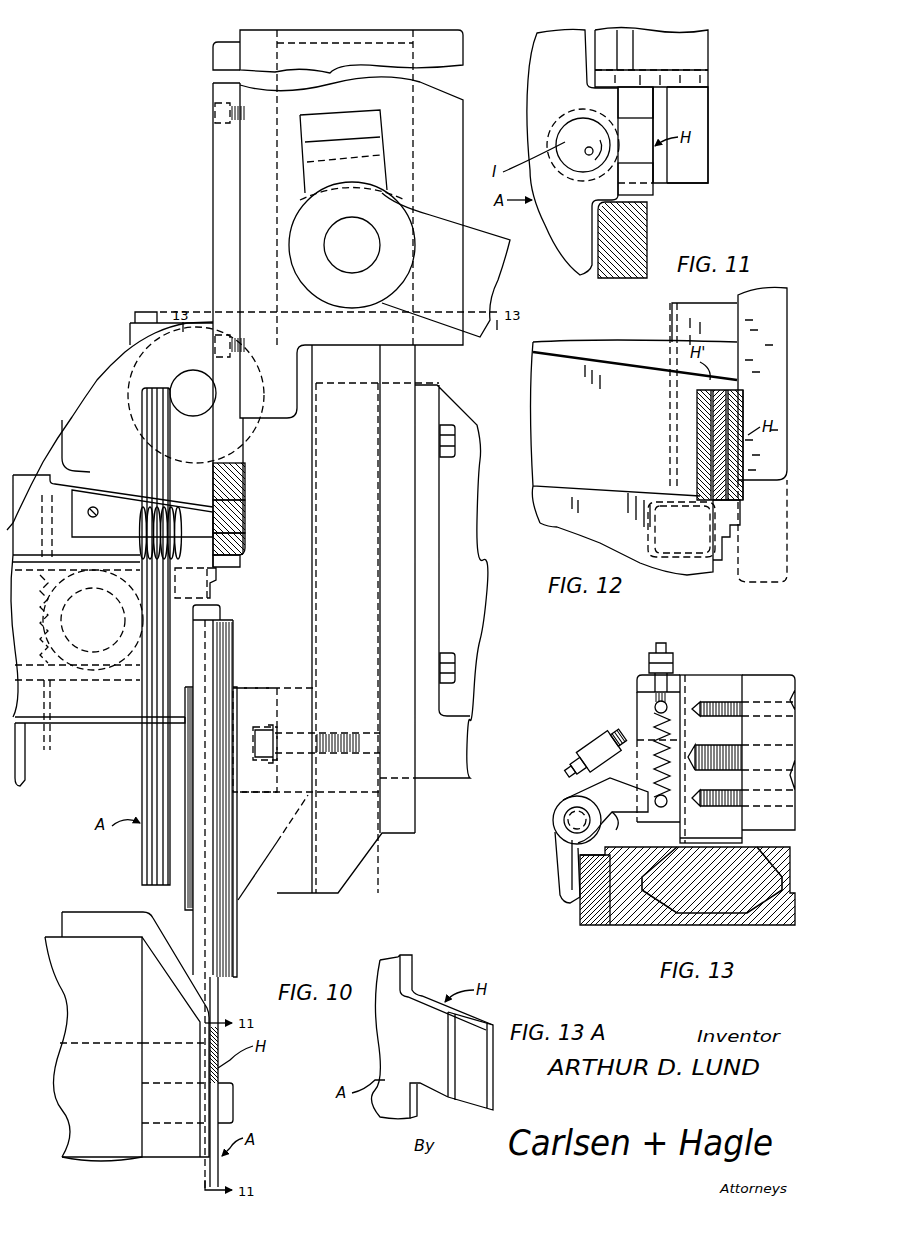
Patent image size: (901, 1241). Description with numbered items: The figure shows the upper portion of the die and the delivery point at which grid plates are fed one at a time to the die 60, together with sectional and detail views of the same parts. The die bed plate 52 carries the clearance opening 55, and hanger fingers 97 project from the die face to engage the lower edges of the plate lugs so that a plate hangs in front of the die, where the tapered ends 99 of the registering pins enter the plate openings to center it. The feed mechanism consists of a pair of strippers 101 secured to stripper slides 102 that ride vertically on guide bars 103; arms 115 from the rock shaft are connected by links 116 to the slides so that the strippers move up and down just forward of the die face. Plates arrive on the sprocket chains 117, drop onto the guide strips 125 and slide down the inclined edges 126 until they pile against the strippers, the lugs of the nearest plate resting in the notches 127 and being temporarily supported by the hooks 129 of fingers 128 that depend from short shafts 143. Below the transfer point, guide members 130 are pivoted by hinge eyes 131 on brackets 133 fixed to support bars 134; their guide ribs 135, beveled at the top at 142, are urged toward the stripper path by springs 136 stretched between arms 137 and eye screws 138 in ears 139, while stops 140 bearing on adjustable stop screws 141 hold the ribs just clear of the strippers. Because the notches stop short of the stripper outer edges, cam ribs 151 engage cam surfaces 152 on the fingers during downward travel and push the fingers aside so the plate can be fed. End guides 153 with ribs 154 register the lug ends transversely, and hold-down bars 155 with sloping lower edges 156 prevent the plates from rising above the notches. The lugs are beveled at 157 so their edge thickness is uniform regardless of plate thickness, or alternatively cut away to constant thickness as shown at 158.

In FIG. 10, the die bed plate 52 is at (60, 985).
In FIG. 10, the clearance opening 55 is at (60, 1045).
In FIG. 10, the die 60 is at (183, 1135).
In FIG. 10, the hanger fingers 97 is at (233, 1097).
In FIG. 11, the hanger fingers 97 is at (648, 230).
In FIG. 11, the tapered ends 99 is at (573, 165).
In FIG. 10, the strippers 101 is at (213, 218).
In FIG. 11, the strippers 101 is at (690, 48).
In FIG. 12, the strippers 101 is at (790, 290).
In FIG. 13, the strippers 101 is at (605, 920).
In FIG. 10, the stripper slides 102 is at (452, 128).
In FIG. 11, the stripper slides 102 is at (572, 152).
In FIG. 10, the guide bars 103 is at (370, 862).
In FIG. 10, the arms 115 is at (492, 291).
In FIG. 10, the links 116 is at (370, 127).
In FIG. 10, the sprocket chains 117 is at (50, 727).
In FIG. 10, the guide strips 125 is at (100, 727).
In FIG. 12, the guide strips 125 is at (605, 540).
In FIG. 10, the inclined edges 126 is at (77, 636).
In FIG. 12, the inclined edges 126 is at (560, 492).
In FIG. 10, the notches 127 is at (240, 490).
In FIG. 11, the notches 127 is at (665, 110).
In FIG. 12, the notches 127 is at (745, 362).
In FIG. 10, the fingers 128 is at (240, 546).
In FIG. 10, the hooks 129 is at (216, 580).
In FIG. 10, the guide members 130 is at (245, 713).
In FIG. 13, the guide members 130 is at (550, 840).
In FIG. 10, the hinge eyes 131 is at (225, 660).
In FIG. 13, the brackets 133 is at (560, 806).
In FIG. 13, the support bars 134 is at (722, 675).
In FIG. 10, the guide ribs 135 is at (238, 900).
In FIG. 13, the guide ribs 135 is at (578, 905).
In FIG. 13, the springs 136 is at (657, 735).
In FIG. 13, the arms 137 is at (616, 830).
In FIG. 13, the eye screws 138 is at (640, 684).
In FIG. 13, the ears 139 is at (650, 660).
In FIG. 13, the stops 140 is at (592, 760).
In FIG. 13, the stop screws 141 is at (578, 740).
In FIG. 10, the beveled upper extremities 142 is at (215, 612).
In FIG. 10, the short shafts 143 is at (271, 322).
In FIG. 10, the cam ribs 151 is at (245, 517).
In FIG. 11, the cam ribs 151 is at (700, 142).
In FIG. 10, the cam surfaces 152 is at (213, 563).
In FIG. 10, the end guides 153 is at (50, 475).
In FIG. 10, the ribs 154 is at (138, 528).
In FIG. 10, the hold-down bars 155 is at (72, 440).
In FIG. 10, the lower edges 156 is at (110, 490).
In FIG. 12, the lower edges 156 is at (622, 362).
In FIG. 10, the bevels 157 is at (138, 545).
In FIG. 11, the bevels 157 is at (734, 166).
In FIG. 12, the bevels 157 is at (745, 402).
In FIG. 13A, the cut-away portion 158 is at (472, 1060).